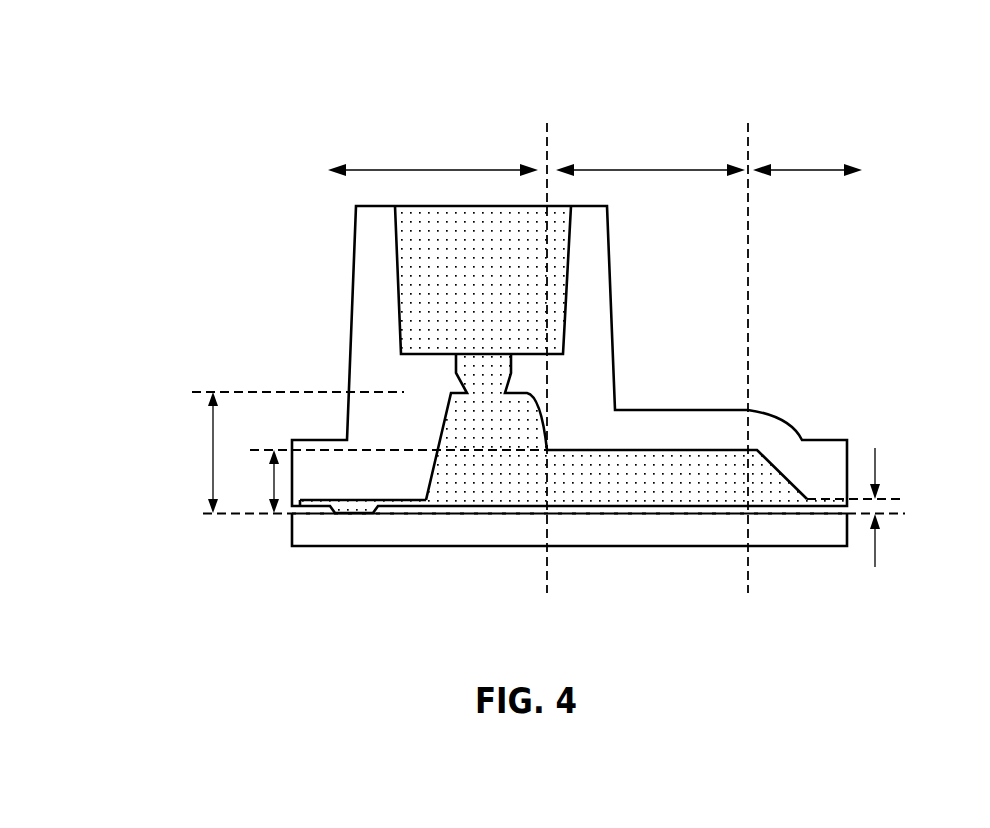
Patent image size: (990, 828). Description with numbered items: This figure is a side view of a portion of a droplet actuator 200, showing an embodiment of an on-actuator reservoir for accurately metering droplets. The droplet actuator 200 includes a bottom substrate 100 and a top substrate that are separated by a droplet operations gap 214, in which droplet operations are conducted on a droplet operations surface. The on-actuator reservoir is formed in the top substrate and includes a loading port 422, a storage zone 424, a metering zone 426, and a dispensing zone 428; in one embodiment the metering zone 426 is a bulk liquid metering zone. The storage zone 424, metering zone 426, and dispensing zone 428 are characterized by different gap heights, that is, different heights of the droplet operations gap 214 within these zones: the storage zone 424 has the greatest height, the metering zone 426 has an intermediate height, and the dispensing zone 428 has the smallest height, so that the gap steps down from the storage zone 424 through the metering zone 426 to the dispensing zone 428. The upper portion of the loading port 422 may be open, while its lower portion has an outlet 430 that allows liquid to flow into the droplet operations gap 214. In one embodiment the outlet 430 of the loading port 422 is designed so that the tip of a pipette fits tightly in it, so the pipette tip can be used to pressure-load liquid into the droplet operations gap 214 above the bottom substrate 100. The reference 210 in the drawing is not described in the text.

The droplet actuator 200 is at (250, 66).
The bottom substrate 100 is at (420, 533).
The gate spacer / dielectric layer 210 is at (614, 328).
The droplet operations gap 214 is at (648, 530).
The loading port 422 is at (568, 285).
The storage zone 424 is at (433, 153).
The metering zone 426 is at (650, 153).
The dispensing zone 428 is at (807, 153).
The outlet 430 is at (480, 354).